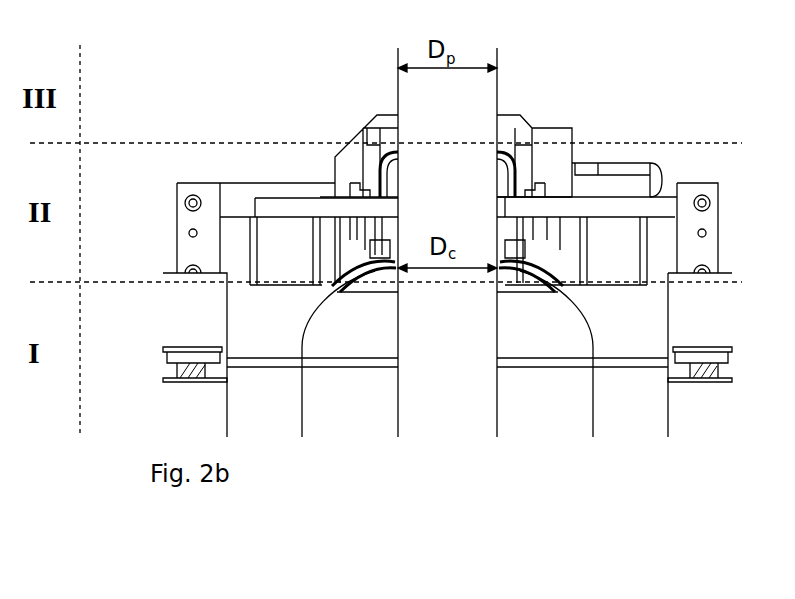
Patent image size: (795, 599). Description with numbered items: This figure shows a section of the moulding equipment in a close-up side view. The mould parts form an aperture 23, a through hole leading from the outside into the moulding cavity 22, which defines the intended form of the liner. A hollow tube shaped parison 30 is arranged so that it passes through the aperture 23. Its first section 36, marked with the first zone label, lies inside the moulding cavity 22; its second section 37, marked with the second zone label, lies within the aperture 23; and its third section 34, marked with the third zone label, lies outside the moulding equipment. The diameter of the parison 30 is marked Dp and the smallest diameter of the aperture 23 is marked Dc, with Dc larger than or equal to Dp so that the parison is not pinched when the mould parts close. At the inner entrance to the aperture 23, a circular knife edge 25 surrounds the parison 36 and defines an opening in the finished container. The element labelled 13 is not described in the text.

The actuator cylinder 13 is at (625, 182).
The moulding cavity 22 is at (537, 383).
The aperture 23 is at (378, 180).
The circular knife edge 25 is at (500, 273).
The parison 30 is at (509, 75).
The third section 34 is at (430, 102).
The first section 36 is at (468, 355).
The second section 37 is at (481, 196).